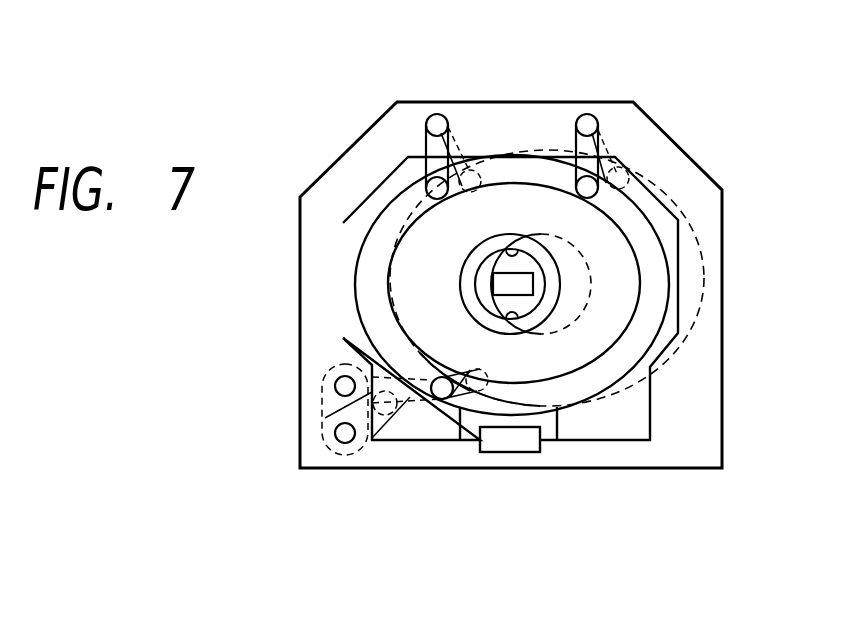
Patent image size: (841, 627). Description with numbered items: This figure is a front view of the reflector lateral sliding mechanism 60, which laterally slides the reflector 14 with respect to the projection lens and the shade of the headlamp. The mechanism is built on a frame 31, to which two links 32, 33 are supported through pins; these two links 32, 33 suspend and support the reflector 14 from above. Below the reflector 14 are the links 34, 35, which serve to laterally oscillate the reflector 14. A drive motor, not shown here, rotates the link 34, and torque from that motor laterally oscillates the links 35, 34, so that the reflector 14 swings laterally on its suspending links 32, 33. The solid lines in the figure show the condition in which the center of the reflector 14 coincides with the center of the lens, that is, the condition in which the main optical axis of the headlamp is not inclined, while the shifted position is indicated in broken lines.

The reflector lateral sliding mechanism 60 is at (486, 100).
The frame 31 is at (664, 148).
The link 32 is at (426, 172).
The link 33 is at (604, 152).
The reflector 14 is at (607, 234).
The link 34 is at (410, 395).
The link 35 is at (333, 452).